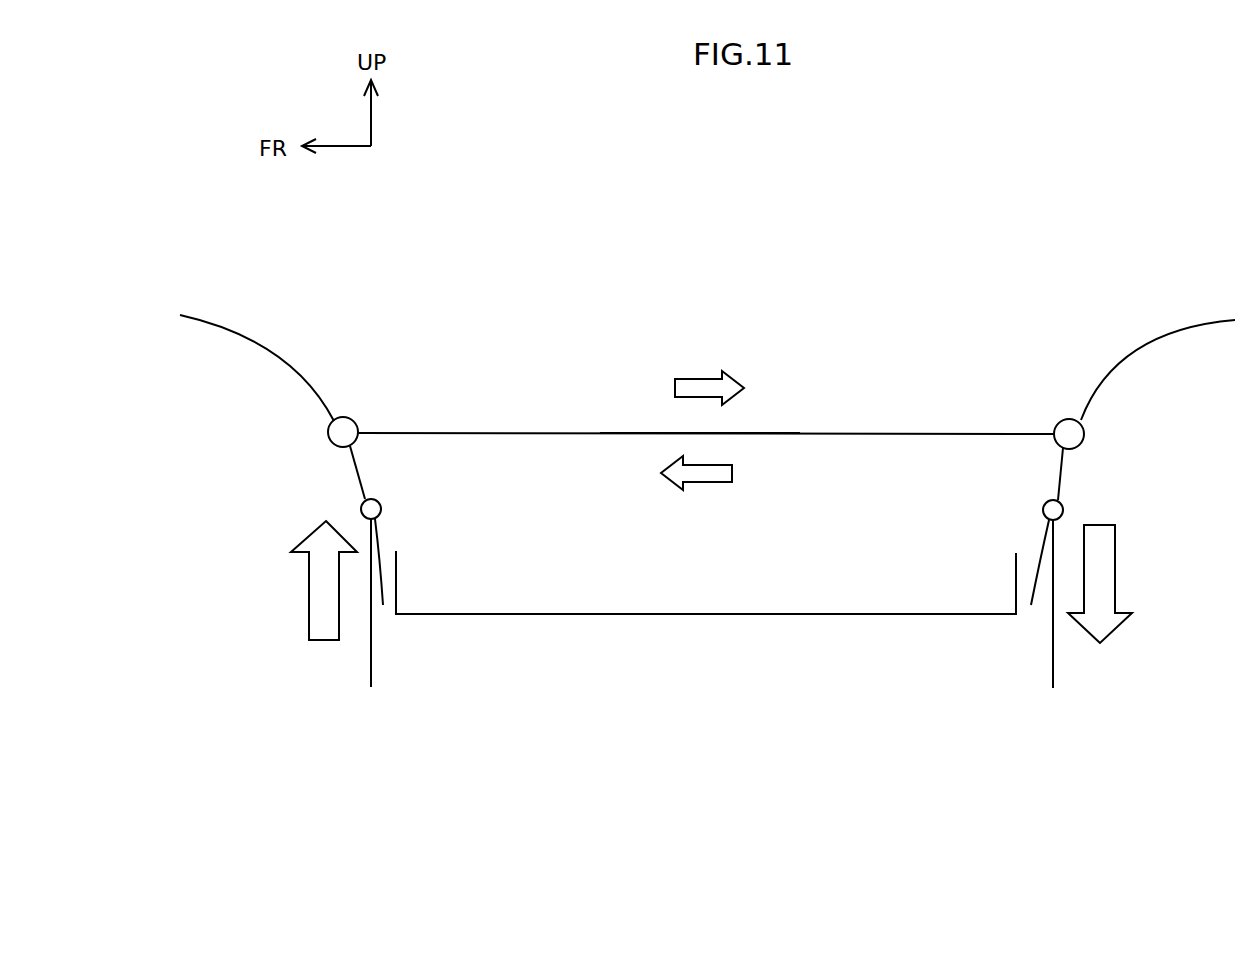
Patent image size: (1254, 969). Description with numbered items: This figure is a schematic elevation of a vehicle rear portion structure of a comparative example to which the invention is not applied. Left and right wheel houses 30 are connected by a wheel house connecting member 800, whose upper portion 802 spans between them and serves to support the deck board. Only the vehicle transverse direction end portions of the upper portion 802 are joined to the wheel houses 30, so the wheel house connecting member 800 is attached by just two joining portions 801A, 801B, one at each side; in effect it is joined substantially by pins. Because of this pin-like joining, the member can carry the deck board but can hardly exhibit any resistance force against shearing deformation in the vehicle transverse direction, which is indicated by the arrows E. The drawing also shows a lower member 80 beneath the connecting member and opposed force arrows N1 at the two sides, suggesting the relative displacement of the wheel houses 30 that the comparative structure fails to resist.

The wheel house 30 is at (252, 335).
The battery pack 80 is at (791, 617).
The wheel house connecting member 800 is at (867, 430).
The joining portion 801A is at (356, 430).
The joining portion 801B is at (1062, 424).
The upper portion 802 is at (803, 432).
The arrows E is at (698, 378).
The force N1 is at (309, 596).